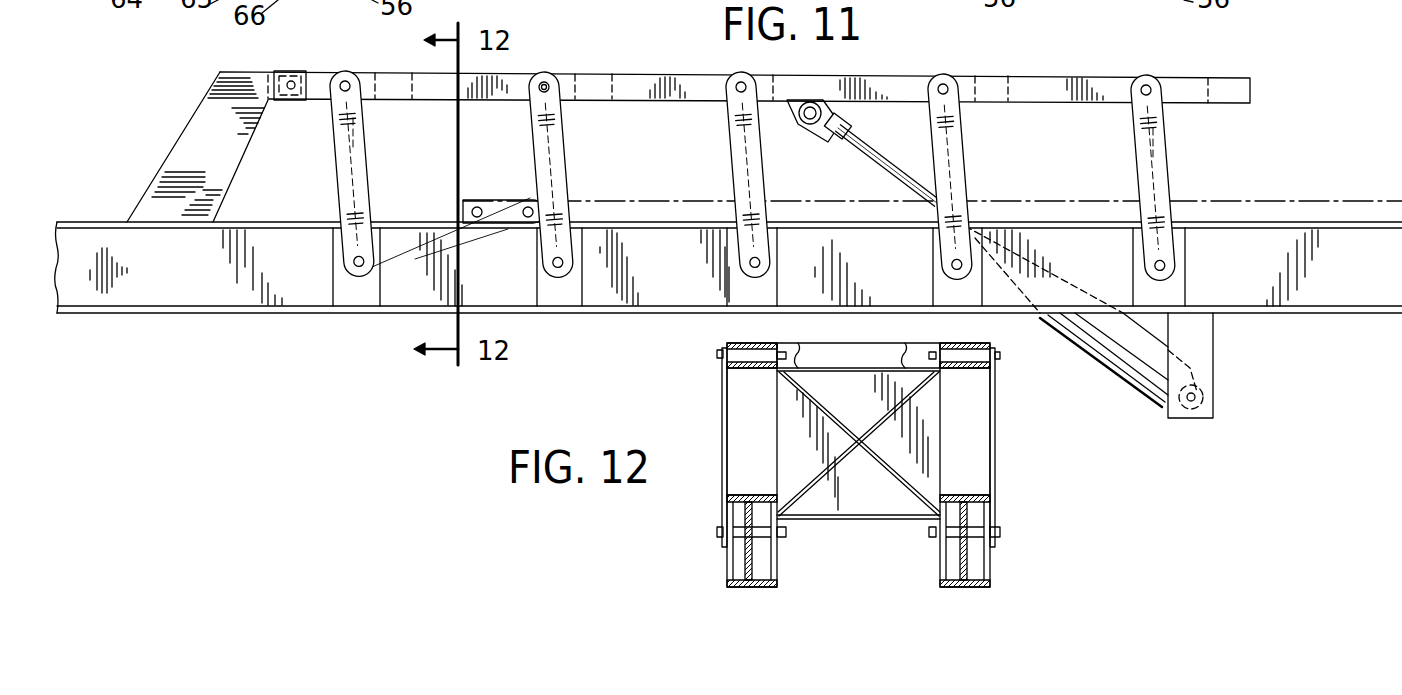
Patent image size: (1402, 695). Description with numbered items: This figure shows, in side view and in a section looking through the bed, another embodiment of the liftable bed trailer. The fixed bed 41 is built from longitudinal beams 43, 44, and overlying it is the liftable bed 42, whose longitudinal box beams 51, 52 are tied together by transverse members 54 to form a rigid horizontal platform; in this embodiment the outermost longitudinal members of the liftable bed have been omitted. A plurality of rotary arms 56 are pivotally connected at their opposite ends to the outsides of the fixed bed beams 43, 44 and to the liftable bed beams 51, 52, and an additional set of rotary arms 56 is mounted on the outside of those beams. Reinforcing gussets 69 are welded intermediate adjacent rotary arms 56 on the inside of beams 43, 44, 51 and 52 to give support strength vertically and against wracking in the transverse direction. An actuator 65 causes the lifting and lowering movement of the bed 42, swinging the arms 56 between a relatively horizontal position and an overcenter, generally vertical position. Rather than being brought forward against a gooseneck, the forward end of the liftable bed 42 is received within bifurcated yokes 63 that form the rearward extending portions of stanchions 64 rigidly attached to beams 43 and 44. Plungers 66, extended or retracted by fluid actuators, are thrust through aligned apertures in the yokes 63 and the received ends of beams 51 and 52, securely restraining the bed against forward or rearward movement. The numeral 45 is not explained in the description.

In FIG. 11, the fixed bed 41 is at (292, 312).
In FIG. 12, the fixed bed 41 is at (900, 477).
In FIG. 11, the liftable bed 42 is at (871, 78).
In FIG. 12, the liftable bed 42 is at (838, 345).
In FIG. 11, the longitudinal beam 43 is at (598, 293).
In FIG. 12, the longitudinal beam 43 is at (778, 564).
In FIG. 12, the longitudinal beam 44 is at (941, 563).
In FIG. 11, the frame member 45 is at (66, 7).
In FIG. 11, the longitudinal box beam 51 is at (518, 86).
In FIG. 12, the longitudinal box beam 51 is at (732, 336).
In FIG. 12, the longitudinal box beam 52 is at (970, 343).
In FIG. 11, the transverse member 54 is at (608, 92).
In FIG. 12, the transverse member 54 is at (870, 355).
In FIG. 11, the rotary arm 56 is at (363, 168).
In FIG. 12, the rotary arm 56 is at (726, 402).
In FIG. 11, the bifurcated yoke 63 is at (263, 73).
In FIG. 11, the stanchion 64 is at (173, 152).
In FIG. 11, the actuator 65 is at (1103, 331).
In FIG. 11, the plunger 66 is at (292, 91).
In FIG. 11, the reinforcing gusset 69 is at (365, 143).
In FIG. 12, the reinforcing gusset 69 is at (865, 497).